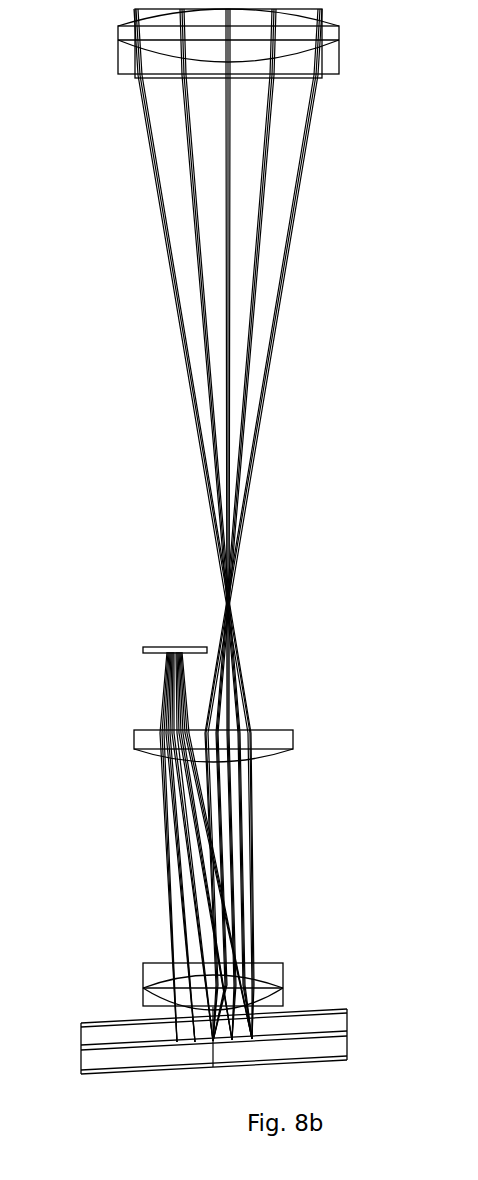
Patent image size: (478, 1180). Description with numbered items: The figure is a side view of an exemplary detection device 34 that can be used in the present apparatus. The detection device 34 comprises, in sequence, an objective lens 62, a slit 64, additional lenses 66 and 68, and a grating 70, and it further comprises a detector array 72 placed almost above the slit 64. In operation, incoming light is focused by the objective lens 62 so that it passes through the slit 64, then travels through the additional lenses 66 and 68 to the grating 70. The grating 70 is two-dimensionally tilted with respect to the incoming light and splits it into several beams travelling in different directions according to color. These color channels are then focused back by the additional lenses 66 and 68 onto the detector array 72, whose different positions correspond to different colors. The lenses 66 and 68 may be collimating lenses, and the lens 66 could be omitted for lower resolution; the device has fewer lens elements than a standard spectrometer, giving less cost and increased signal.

The detection device 34 is at (174, 538).
The objective lens 62 is at (200, 48).
The slit 64 is at (262, 620).
The additional lens 66 is at (185, 726).
The additional lens 68 is at (185, 977).
The grating 70 is at (214, 1065).
The detector array 72 is at (152, 661).